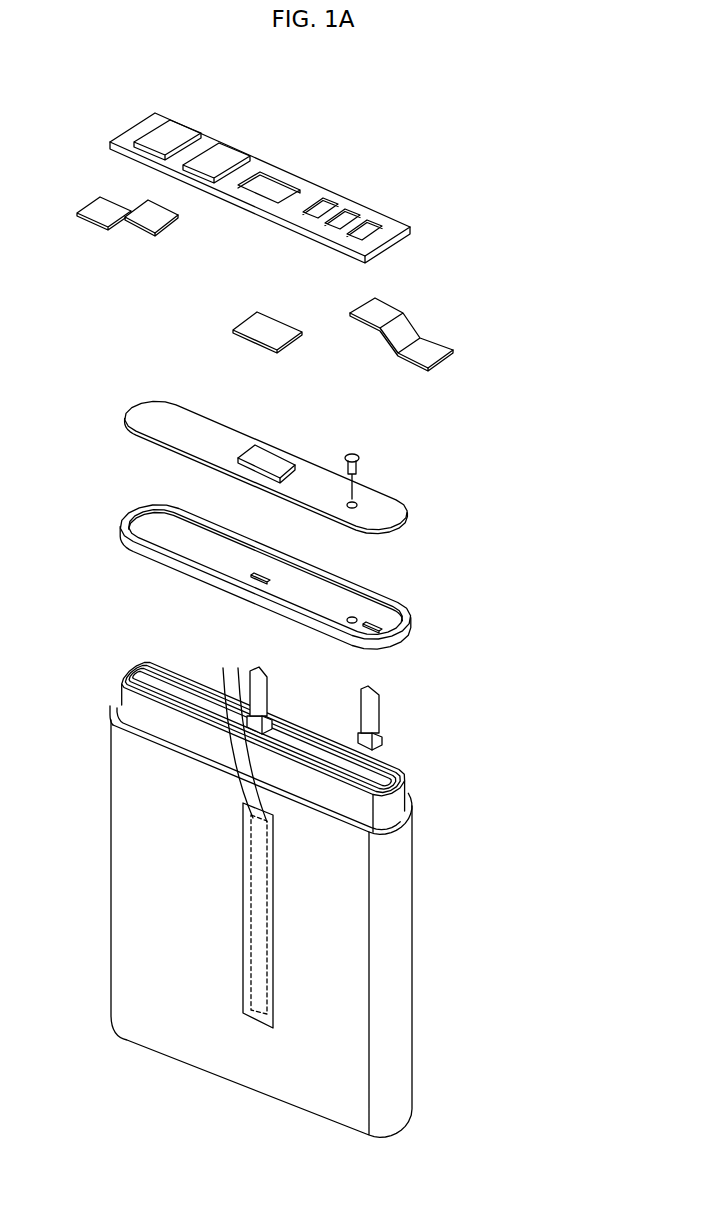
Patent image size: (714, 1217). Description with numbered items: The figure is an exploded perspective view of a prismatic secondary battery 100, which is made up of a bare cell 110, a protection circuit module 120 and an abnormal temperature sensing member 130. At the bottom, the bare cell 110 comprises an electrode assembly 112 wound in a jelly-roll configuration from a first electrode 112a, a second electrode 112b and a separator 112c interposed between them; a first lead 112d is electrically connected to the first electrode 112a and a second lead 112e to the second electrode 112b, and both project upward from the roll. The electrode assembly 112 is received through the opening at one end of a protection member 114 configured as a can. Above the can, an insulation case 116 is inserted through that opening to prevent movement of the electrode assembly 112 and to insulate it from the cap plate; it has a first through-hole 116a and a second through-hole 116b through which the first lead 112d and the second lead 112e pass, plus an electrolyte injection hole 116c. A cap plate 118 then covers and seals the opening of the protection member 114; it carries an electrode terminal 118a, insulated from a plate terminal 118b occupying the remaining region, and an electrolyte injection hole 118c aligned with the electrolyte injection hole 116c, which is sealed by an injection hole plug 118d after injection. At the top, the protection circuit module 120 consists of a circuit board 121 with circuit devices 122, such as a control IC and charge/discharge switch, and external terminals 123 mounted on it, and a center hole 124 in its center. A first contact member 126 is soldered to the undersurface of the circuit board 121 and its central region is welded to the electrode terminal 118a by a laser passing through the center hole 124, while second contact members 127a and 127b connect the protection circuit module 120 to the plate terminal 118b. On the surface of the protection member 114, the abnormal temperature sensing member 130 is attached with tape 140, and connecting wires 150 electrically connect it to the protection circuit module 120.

The secondary battery 100 is at (431, 114).
The bare cell 110 is at (530, 400).
The electrode assembly 112 is at (474, 666).
The first electrode 112a is at (387, 765).
The second electrode 112b is at (404, 779).
The separator 112c is at (394, 774).
The first lead 112d is at (263, 666).
The second lead 112e is at (378, 688).
The protection member 114 is at (401, 893).
The insulation case 116 is at (208, 523).
The first through-hole 116a is at (260, 575).
The second through-hole 116b is at (373, 625).
The electrolyte injection hole 116c is at (352, 615).
The cap plate 118 is at (300, 370).
The electrode terminal 118a is at (273, 460).
The plate terminal 118b is at (322, 473).
The electrolyte injection hole 118c is at (357, 503).
The injection hole plug 118d is at (357, 452).
The protection circuit module 120 is at (247, 83).
The circuit board 121 is at (303, 183).
The circuit devices 122 is at (222, 148).
The external terminals 123 is at (373, 218).
The center hole 124 is at (270, 177).
The first contact member 126 is at (248, 323).
The second contact member 127a is at (90, 207).
The second contact member 127b is at (432, 345).
The abnormal temperature sensing member 130 is at (252, 885).
The tape 140 is at (243, 830).
The connecting wires 150 is at (243, 703).